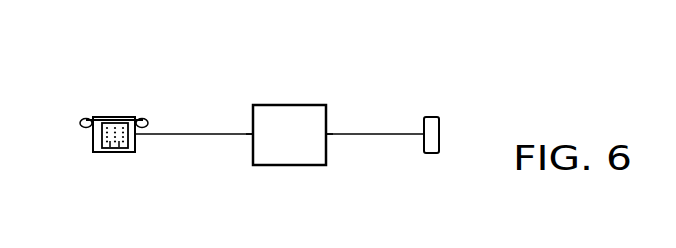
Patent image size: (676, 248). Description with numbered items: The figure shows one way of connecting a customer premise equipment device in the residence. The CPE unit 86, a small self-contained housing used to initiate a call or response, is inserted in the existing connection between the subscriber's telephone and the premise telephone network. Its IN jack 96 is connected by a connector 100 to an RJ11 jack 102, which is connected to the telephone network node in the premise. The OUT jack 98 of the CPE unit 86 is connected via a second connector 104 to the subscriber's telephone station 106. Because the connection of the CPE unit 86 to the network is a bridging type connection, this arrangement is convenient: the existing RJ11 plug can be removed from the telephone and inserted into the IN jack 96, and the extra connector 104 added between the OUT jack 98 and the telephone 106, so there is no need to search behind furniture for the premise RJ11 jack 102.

The telephone station 106 is at (109, 115).
The connector 104 is at (208, 136).
The OUT jack 98 is at (252, 133).
The CPE unit 86 is at (308, 107).
The IN jack 96 is at (327, 131).
The connector 100 is at (388, 136).
The RJ11 jack 102 is at (432, 125).